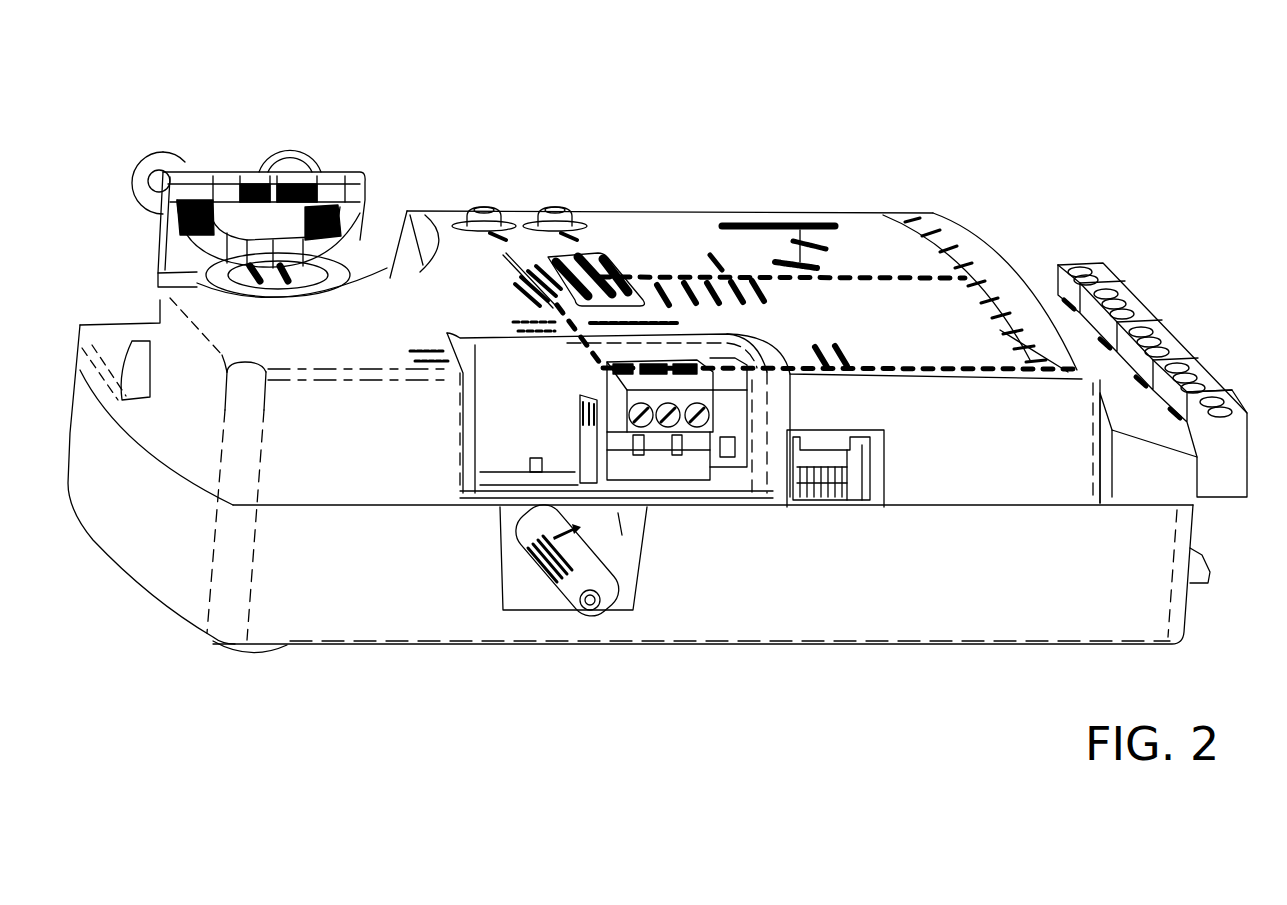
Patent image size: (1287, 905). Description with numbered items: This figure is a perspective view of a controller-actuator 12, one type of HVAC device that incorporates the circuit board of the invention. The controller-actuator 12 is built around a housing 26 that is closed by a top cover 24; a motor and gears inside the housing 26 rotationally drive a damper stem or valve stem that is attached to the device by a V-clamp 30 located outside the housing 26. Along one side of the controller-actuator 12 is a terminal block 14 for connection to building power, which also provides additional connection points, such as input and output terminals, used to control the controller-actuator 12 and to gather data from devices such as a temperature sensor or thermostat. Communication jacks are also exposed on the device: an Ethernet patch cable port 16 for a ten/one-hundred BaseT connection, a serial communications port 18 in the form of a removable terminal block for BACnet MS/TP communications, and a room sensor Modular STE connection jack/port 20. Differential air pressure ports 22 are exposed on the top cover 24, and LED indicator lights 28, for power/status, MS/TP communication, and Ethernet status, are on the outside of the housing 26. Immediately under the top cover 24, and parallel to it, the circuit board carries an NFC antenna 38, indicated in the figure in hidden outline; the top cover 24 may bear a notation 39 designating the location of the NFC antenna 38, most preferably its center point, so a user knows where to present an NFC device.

The controller-actuator 12 is at (661, 86).
The terminal block 14 is at (1172, 343).
The Ethernet patch cable port 16 is at (863, 497).
The EIA-485 port 18 is at (648, 385).
The room sensor Modular STE connection jack/port 20 is at (737, 460).
The differential air pressure ports 22 is at (484, 206).
The top cover 24 is at (864, 252).
The housing 26 is at (377, 610).
The LED indicator lights 28 is at (730, 387).
The V-clamp 30 is at (221, 178).
The NFC antenna 38 is at (903, 315).
The notation 39 is at (799, 230).